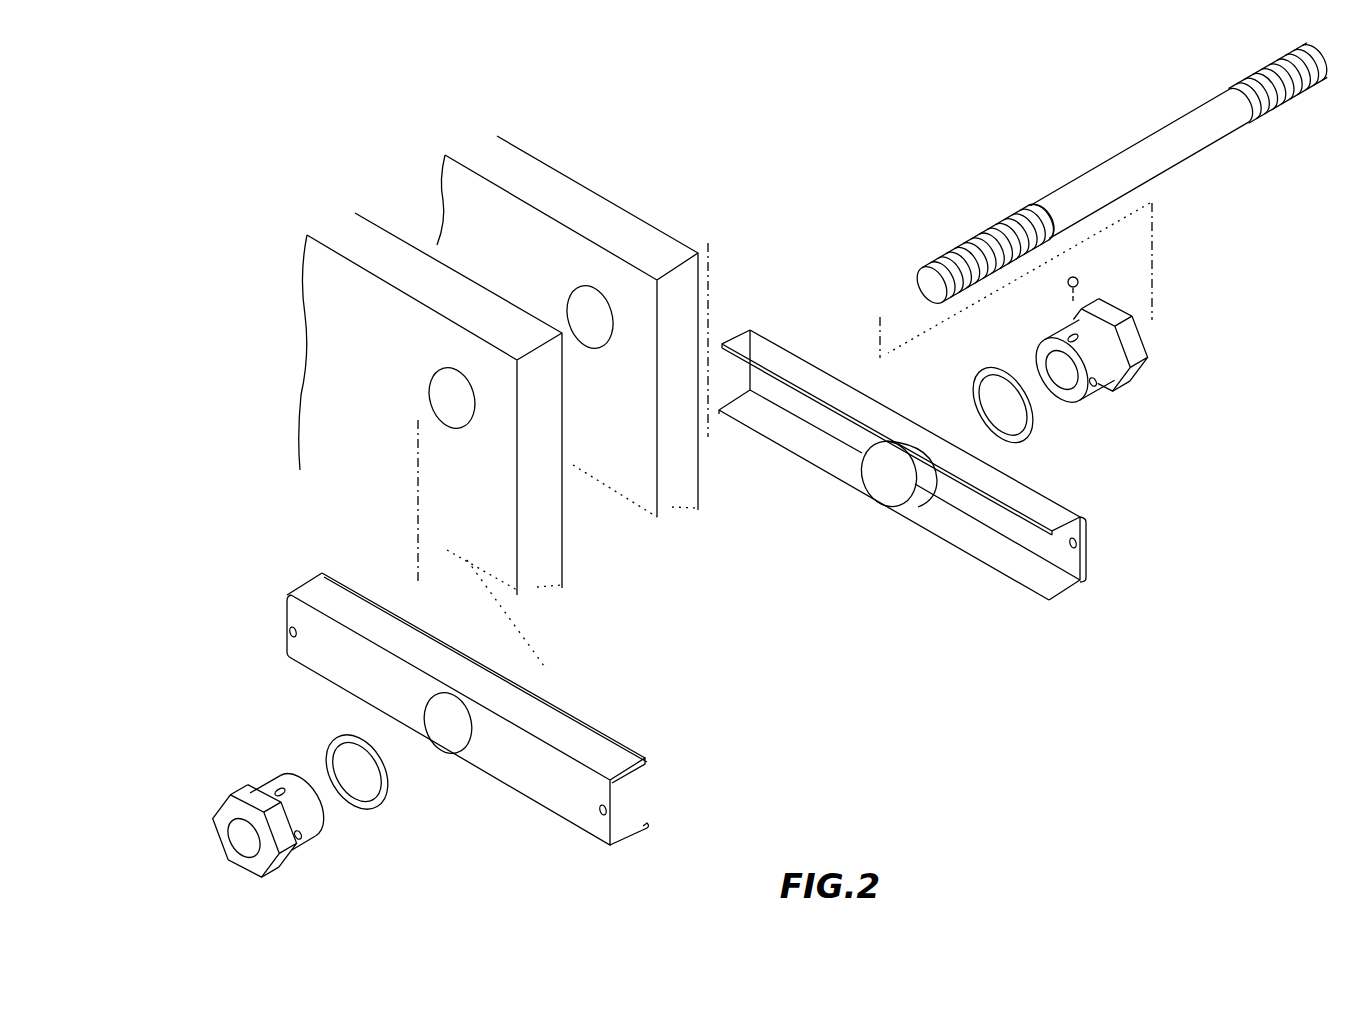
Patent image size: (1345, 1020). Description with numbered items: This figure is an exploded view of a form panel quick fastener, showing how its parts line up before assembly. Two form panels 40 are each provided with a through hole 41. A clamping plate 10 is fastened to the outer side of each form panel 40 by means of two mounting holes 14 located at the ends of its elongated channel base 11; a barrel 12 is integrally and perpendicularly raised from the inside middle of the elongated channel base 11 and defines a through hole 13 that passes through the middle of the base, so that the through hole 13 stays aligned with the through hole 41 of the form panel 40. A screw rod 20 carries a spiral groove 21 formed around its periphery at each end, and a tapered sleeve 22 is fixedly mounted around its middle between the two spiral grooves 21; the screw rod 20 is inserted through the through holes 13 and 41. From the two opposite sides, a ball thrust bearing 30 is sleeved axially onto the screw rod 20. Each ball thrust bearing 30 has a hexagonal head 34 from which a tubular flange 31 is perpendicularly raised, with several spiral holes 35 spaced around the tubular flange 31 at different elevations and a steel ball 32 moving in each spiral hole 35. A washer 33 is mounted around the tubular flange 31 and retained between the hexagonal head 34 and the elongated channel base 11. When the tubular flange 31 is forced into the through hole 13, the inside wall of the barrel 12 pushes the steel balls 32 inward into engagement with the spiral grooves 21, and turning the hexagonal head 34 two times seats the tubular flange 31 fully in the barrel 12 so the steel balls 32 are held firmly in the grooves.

The clamping plate 10 is at (537, 773).
The elongated channel base 11 is at (1000, 557).
The barrel 12 is at (927, 477).
The through hole 13 is at (895, 485).
The mounting hole 14 is at (604, 816).
The screw rod 20 is at (1122, 173).
The spiral groove 21 is at (991, 250).
The tapered sleeve 22 is at (1144, 160).
The ball thrust bearing 30 is at (699, 568).
The tubular flange 31 is at (1077, 408).
The steel ball 32 is at (1079, 278).
The washer 33 is at (413, 867).
The hexagonal head 34 is at (208, 880).
The spiral hole 35 is at (1042, 333).
The form panel 40 is at (577, 200).
The through hole 41 is at (590, 305).